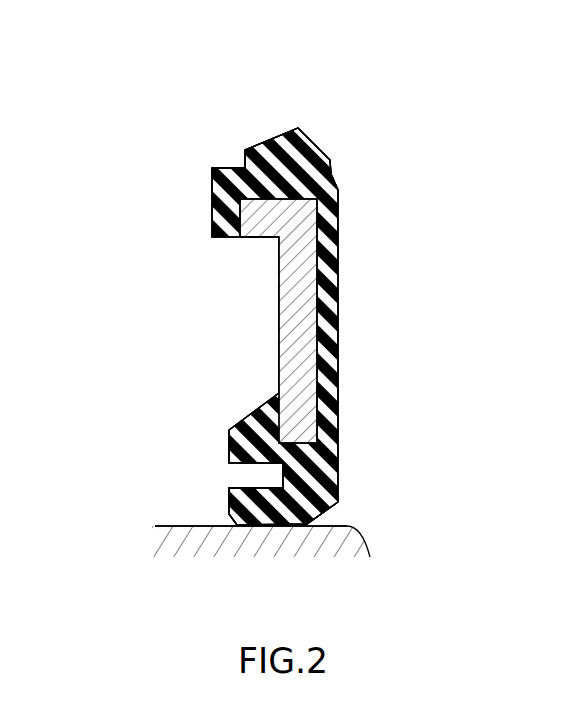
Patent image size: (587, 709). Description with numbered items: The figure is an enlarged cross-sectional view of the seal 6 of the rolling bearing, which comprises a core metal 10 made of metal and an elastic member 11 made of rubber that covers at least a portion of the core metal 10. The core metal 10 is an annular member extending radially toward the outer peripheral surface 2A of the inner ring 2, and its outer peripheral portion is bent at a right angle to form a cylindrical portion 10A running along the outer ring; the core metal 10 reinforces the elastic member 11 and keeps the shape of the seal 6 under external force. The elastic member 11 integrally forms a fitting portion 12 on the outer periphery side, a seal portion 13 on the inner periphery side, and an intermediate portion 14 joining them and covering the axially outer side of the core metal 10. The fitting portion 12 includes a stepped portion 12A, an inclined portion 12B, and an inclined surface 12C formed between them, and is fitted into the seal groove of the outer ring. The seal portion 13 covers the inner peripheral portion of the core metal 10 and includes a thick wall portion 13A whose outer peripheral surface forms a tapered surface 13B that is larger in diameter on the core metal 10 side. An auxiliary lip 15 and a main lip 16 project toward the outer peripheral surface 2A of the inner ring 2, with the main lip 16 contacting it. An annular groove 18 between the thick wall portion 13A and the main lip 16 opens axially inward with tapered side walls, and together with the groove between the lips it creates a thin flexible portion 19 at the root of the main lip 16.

The inner ring 2 is at (283, 535).
The outer peripheral surface of the inner ring 2A is at (178, 526).
The seal 6 is at (410, 150).
The core metal 10 is at (298, 298).
The cylindrical portion 10A is at (255, 236).
The elastic member 11 is at (338, 282).
The fitting portion 12 is at (280, 165).
The stepped portion 12A is at (223, 167).
The inclined portion 12B is at (318, 143).
The inclined surface 12C is at (263, 147).
The seal portion 13 is at (335, 477).
The thick wall portion 13A is at (230, 437).
The tapered surface 13B is at (262, 407).
The intermediate portion 14 is at (333, 363).
The auxiliary lip 15 is at (305, 515).
The main lip 16 is at (247, 508).
The annular groove 18 is at (280, 472).
The flexible portion 19 is at (283, 505).